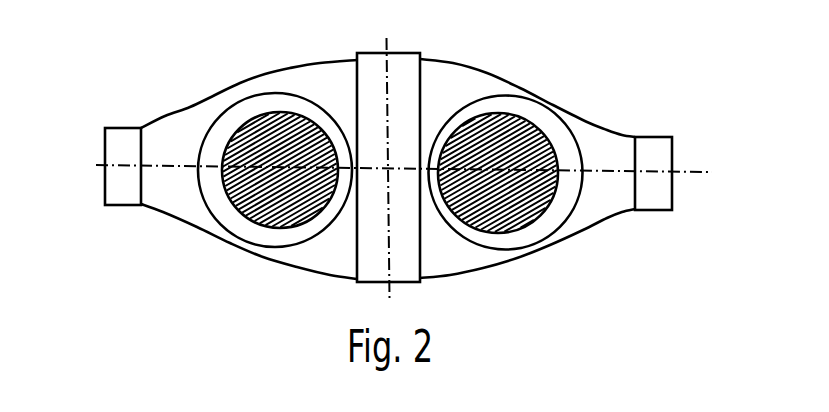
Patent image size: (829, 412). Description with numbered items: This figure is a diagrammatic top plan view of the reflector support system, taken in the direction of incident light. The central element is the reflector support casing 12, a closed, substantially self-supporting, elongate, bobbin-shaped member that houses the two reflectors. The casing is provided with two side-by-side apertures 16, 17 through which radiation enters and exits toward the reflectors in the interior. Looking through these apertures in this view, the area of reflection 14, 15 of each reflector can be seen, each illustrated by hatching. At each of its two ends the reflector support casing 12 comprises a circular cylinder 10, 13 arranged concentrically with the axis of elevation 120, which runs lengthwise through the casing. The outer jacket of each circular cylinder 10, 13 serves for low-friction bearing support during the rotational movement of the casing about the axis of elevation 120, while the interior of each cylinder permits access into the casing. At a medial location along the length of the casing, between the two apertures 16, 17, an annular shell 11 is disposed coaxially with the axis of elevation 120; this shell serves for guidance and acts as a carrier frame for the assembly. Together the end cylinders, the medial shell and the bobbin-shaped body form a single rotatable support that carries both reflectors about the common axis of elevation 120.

The circular cylinder 10 is at (122, 128).
The annular shell 11 is at (407, 53).
The reflector support casing 12 is at (548, 90).
The circular cylinder 13 is at (650, 137).
The axis of elevation 120 is at (672, 172).
The area of reflection 14 is at (287, 248).
The area of reflection 15 is at (528, 223).
The aperture 16 is at (245, 240).
The aperture 17 is at (575, 208).